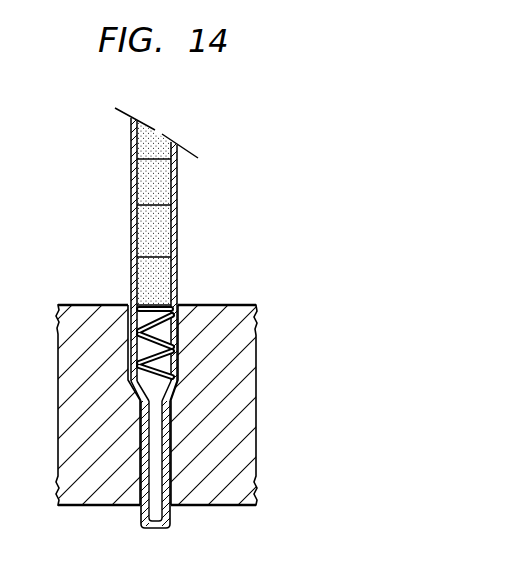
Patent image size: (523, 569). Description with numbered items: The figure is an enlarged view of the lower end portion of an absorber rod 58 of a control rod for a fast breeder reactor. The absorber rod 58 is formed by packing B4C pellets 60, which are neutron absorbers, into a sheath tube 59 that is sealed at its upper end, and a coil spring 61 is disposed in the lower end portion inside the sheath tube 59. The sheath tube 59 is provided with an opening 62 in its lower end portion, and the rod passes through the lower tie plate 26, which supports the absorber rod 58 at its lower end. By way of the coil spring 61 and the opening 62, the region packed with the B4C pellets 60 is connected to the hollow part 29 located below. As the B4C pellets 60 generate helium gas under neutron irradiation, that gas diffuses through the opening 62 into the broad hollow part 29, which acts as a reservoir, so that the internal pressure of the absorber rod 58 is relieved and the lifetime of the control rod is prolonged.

The lower tie plate 26 is at (228, 353).
The hollow part 29 is at (197, 533).
The absorber rod 58 is at (178, 198).
The sheath tube 59 is at (178, 228).
The B4C pellets 60 is at (167, 267).
The coil spring 61 is at (175, 335).
The opening 62 is at (157, 458).